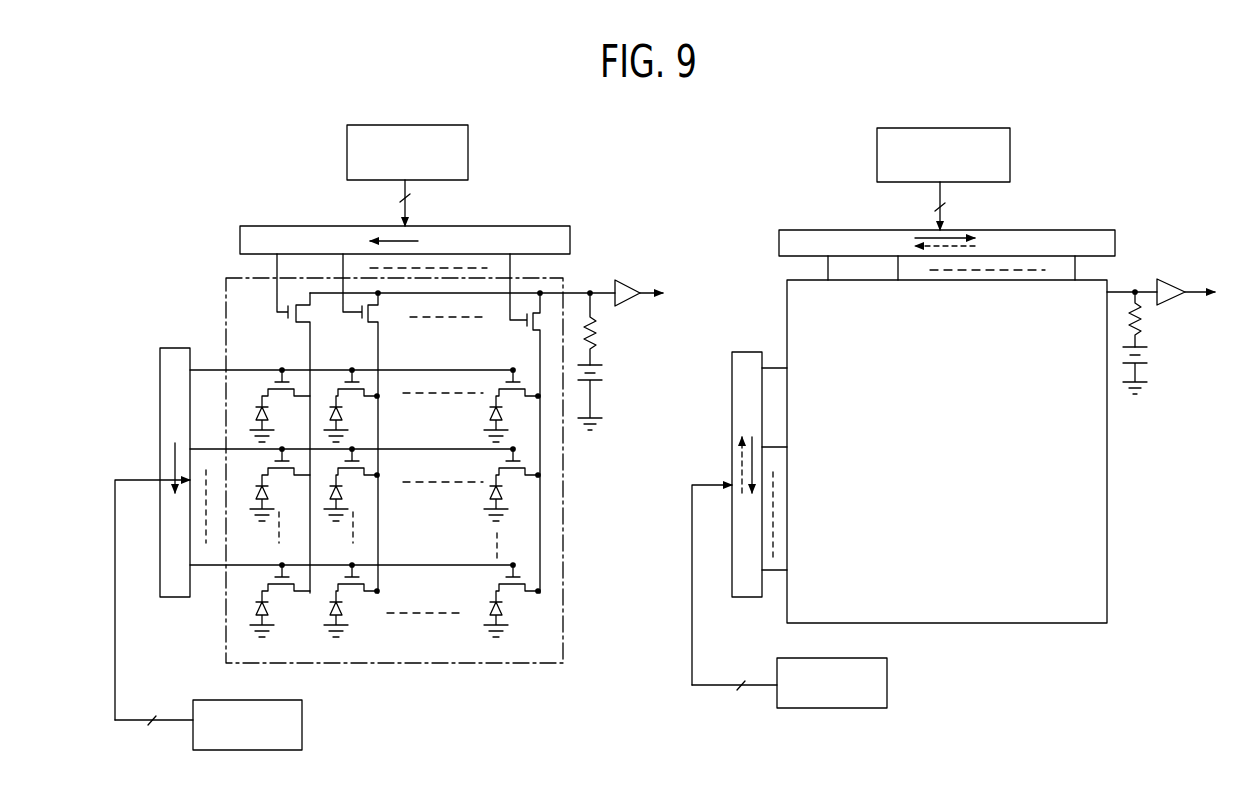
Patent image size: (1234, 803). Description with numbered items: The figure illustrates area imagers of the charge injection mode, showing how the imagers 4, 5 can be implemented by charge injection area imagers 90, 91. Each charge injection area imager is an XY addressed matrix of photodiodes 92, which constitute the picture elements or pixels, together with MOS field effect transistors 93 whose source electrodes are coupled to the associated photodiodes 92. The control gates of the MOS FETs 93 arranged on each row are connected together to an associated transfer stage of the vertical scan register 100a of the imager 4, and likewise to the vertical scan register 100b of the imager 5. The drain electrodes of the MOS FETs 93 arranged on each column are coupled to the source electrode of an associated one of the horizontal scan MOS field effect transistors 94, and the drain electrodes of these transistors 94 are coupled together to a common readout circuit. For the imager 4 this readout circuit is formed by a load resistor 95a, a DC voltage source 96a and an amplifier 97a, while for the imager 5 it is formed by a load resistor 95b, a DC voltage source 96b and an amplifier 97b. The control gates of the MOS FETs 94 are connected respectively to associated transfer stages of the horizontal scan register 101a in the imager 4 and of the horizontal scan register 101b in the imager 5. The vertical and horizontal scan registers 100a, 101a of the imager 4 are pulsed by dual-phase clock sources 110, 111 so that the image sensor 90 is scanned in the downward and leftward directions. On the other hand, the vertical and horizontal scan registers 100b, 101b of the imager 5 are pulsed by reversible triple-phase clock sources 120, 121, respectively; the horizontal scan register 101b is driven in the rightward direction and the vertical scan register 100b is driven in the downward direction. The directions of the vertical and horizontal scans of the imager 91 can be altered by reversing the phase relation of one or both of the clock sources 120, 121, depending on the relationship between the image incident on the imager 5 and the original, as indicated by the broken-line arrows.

The imager 4 is at (230, 198).
The imager 5 is at (784, 198).
The charge injection area imager 90 is at (389, 454).
The charge injection area imager 91 is at (787, 292).
The photodiodes 92 is at (258, 407).
The MOS field effect transistors 93 is at (290, 383).
The horizontal scan MOS field effect transistors 94 is at (515, 325).
The load resistor 95a is at (597, 343).
The load resistor 95b is at (1142, 322).
The DC voltage source 96a is at (600, 383).
The DC voltage source 96b is at (1143, 362).
The amplifier 97a is at (627, 283).
The amplifier 97b is at (1170, 280).
The vertical scan register 100a is at (176, 348).
The vertical scan register 100b is at (733, 355).
The horizontal scan register 101a is at (267, 225).
The horizontal scan register 101b is at (797, 230).
The dual-phase clock source 110 is at (302, 726).
The dual-phase clock source 111 is at (469, 154).
The reversible triple-phase clock source 120 is at (887, 692).
The reversible triple-phase clock source 121 is at (1010, 157).